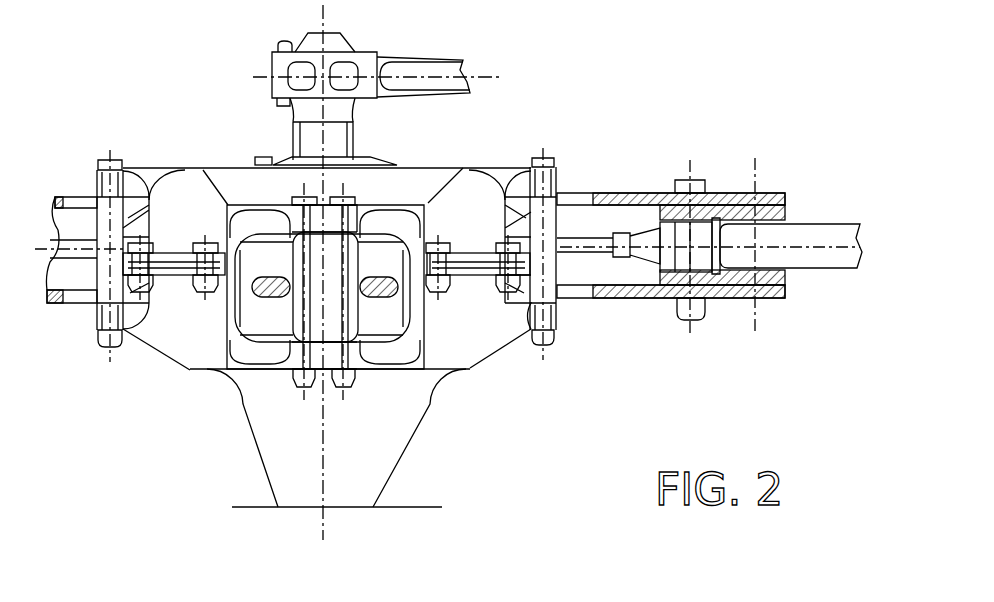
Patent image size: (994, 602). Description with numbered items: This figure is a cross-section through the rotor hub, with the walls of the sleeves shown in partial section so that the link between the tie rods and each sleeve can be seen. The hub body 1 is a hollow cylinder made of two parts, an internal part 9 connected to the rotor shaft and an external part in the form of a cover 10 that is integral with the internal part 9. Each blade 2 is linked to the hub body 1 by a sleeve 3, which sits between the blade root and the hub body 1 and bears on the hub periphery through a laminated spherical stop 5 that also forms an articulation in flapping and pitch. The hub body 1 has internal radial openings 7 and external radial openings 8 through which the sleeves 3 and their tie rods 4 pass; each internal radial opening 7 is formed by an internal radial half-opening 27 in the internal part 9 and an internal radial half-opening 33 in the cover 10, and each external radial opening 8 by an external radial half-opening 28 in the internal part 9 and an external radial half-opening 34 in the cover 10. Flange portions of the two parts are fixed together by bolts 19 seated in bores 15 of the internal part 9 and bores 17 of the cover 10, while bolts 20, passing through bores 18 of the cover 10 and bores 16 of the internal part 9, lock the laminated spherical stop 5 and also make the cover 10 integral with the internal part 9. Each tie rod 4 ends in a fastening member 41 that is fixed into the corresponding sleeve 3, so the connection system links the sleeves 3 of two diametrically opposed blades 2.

The hub body 1 is at (474, 373).
The blade 2 is at (817, 235).
The sleeve 3 is at (60, 305).
The tie rod 4 is at (73, 243).
The laminated spherical stop 5 is at (93, 228).
The internal radial opening 7 is at (397, 350).
The external radial opening 8 is at (133, 178).
The internal part 9 is at (203, 358).
The cover 10 is at (193, 190).
The bore 15 is at (193, 280).
The bore 16 is at (563, 320).
The bore 17 is at (180, 303).
The bore 18 is at (558, 172).
The bolt 19 is at (210, 243).
The bolt 20 is at (100, 163).
The internal radial half-opening 27 is at (213, 362).
The external radial half-opening 28 is at (135, 330).
The internal radial half-opening 33 is at (248, 222).
The external radial half-opening 34 is at (140, 190).
The fastening member 41 is at (652, 240).